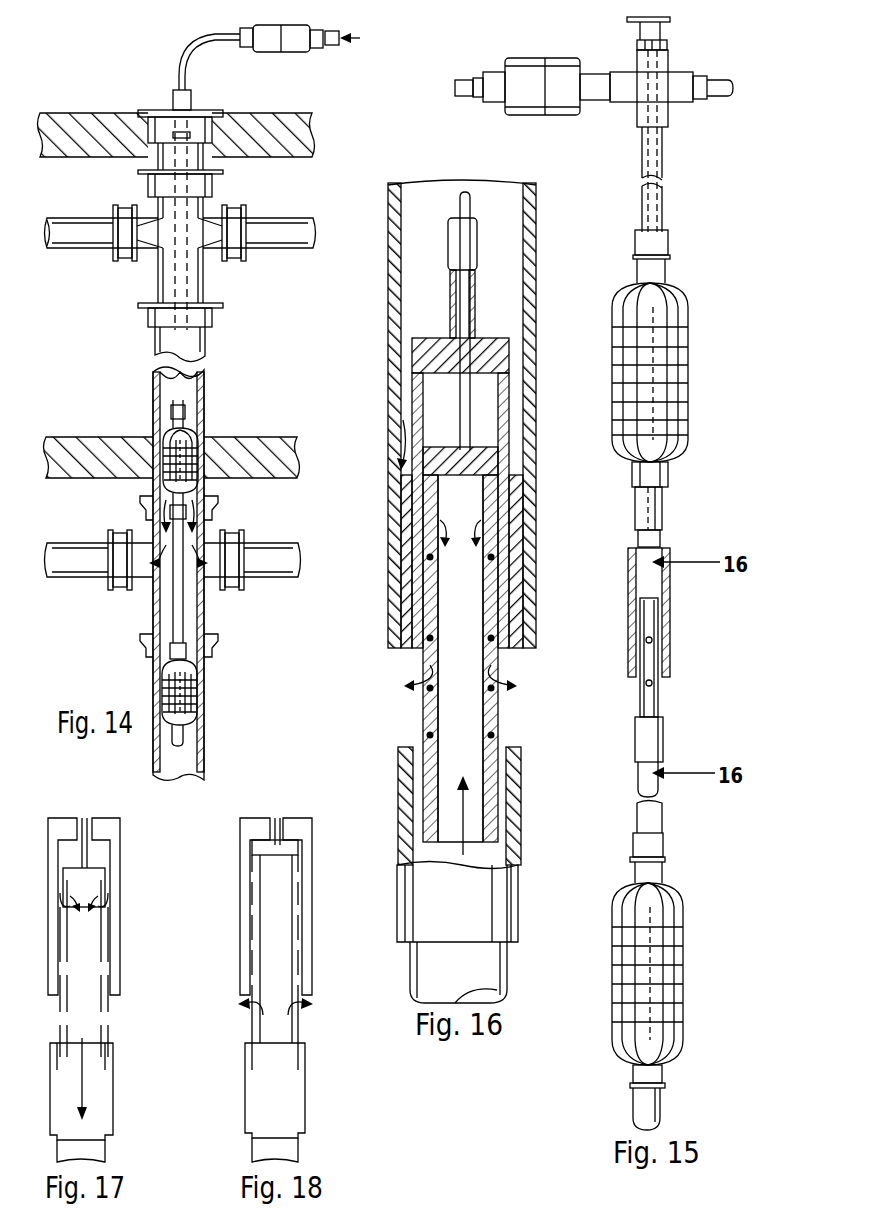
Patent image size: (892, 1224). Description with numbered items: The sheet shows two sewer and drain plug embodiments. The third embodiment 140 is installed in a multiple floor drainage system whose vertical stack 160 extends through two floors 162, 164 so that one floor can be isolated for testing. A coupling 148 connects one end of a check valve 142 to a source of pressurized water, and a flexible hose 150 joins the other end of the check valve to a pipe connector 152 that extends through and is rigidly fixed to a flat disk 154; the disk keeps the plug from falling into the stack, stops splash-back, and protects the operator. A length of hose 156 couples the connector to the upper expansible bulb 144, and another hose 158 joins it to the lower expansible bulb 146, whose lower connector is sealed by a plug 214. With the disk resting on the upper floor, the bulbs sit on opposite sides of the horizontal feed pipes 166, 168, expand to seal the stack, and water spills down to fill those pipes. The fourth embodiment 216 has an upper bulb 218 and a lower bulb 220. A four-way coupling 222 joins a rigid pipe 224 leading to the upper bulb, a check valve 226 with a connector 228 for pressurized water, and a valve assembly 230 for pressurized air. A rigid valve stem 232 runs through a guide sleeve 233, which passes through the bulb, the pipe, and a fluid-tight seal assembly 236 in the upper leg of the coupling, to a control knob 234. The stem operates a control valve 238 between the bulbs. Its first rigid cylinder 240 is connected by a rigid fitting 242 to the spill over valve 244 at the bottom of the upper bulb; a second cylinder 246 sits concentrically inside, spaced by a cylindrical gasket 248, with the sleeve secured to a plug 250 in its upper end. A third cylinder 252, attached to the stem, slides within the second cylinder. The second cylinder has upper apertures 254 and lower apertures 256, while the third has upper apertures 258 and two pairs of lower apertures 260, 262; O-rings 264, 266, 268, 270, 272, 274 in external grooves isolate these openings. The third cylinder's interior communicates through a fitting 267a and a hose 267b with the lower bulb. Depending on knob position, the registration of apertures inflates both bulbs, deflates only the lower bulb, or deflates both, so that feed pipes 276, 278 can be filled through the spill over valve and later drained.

In FIG. 14, the third embodiment 140 is at (188, 428).
In FIG. 14, the check valve 142 is at (284, 53).
In FIG. 14, the upper expansible bulb 144 is at (163, 440).
In FIG. 14, the lower expansible bulb 146 is at (184, 694).
In FIG. 14, the coupling 148 is at (352, 45).
In FIG. 14, the flexible hose 150 is at (201, 41).
In FIG. 14, the pipe connector 152 is at (176, 95).
In FIG. 14, the flat disk 154 is at (150, 112).
In FIG. 14, the length of hose 156 is at (175, 277).
In FIG. 14, the length of hose 158 is at (176, 598).
In FIG. 14, the vertical stack 160 is at (205, 352).
In FIG. 14, the floor 162 is at (92, 112).
In FIG. 14, the floor 164 is at (150, 450).
In FIG. 14, the horizontal feed pipe 166 is at (82, 543).
In FIG. 14, the horizontal feed pipe 168 is at (258, 543).
In FIG. 14, the plug 214 is at (197, 745).
In FIG. 15, the plug 214 is at (660, 1118).
In FIG. 15, the fourth embodiment 216 is at (683, 296).
In FIG. 15, the upper bulb 218 is at (675, 378).
In FIG. 15, the lower bulb 220 is at (660, 918).
In FIG. 15, the four-way coupling 222 is at (680, 106).
In FIG. 15, the rigid pipe 224 is at (664, 202).
In FIG. 15, the check valve 226 is at (525, 60).
In FIG. 15, the connector 228 is at (460, 98).
In FIG. 15, the valve assembly 230 is at (701, 78).
In FIG. 16, the valve stem 232 is at (468, 200).
In FIG. 17, the valve stem 232 is at (84, 853).
In FIG. 18, the valve stem 232 is at (283, 822).
In FIG. 15, the guide sleeve 233 is at (645, 178).
In FIG. 16, the guide sleeve 233 is at (460, 225).
In FIG. 15, the control knob 234 is at (664, 32).
In FIG. 15, the fluid-tight seal assembly 236 is at (637, 46).
In FIG. 15, the control valve 238 is at (671, 637).
In FIG. 16, the control valve 238 is at (408, 722).
In FIG. 15, the first rigid cylinder 240 is at (670, 615).
In FIG. 16, the first rigid cylinder 240 is at (530, 267).
In FIG. 17, the first rigid cylinder 240 is at (118, 935).
In FIG. 18, the first rigid cylinder 240 is at (312, 895).
In FIG. 15, the rigid fitting 242 is at (662, 538).
In FIG. 15, the spill over valve 244 is at (665, 505).
In FIG. 15, the second cylinder 246 is at (646, 696).
In FIG. 16, the second cylinder 246 is at (505, 377).
In FIG. 17, the second cylinder 246 is at (109, 1025).
In FIG. 18, the second cylinder 246 is at (300, 1028).
In FIG. 16, the cylindrical gasket 248 is at (514, 576).
In FIG. 16, the plug 250 is at (448, 360).
In FIG. 16, the third cylinder 252 is at (495, 713).
In FIG. 17, the third cylinder 252 is at (108, 954).
In FIG. 18, the third cylinder 252 is at (295, 933).
In FIG. 15, the upper apertures 254 is at (646, 640).
In FIG. 16, the upper apertures 254 is at (505, 480).
In FIG. 17, the upper apertures 254 is at (107, 912).
In FIG. 18, the upper apertures 254 is at (298, 910).
In FIG. 15, the lower apertures 256 is at (652, 684).
In FIG. 16, the lower apertures 256 is at (510, 667).
In FIG. 17, the lower apertures 256 is at (108, 1008).
In FIG. 18, the lower apertures 256 is at (300, 1004).
In FIG. 16, the upper apertures 258 is at (488, 520).
In FIG. 17, the upper apertures 258 is at (63, 908).
In FIG. 18, the upper apertures 258 is at (291, 877).
In FIG. 16, the lower apertures 260 is at (485, 655).
In FIG. 17, the lower apertures 260 is at (65, 975).
In FIG. 18, the lower apertures 260 is at (257, 953).
In FIG. 16, the lower apertures 262 is at (508, 752).
In FIG. 17, the lower apertures 262 is at (65, 1025).
In FIG. 18, the lower apertures 262 is at (255, 1010).
In FIG. 16, the O-ring 264 is at (402, 462).
In FIG. 16, the O-ring 266 is at (420, 560).
In FIG. 15, the fitting 267a is at (663, 742).
In FIG. 16, the fitting 267a is at (508, 887).
In FIG. 17, the fitting 267a is at (113, 1098).
In FIG. 18, the fitting 267a is at (305, 1100).
In FIG. 15, the hose 267b is at (660, 818).
In FIG. 16, the hose 267b is at (487, 973).
In FIG. 17, the hose 267b is at (105, 1152).
In FIG. 18, the hose 267b is at (298, 1152).
In FIG. 16, the O-ring 268 is at (422, 638).
In FIG. 16, the O-ring 270 is at (417, 687).
In FIG. 16, the O-ring 272 is at (423, 740).
In FIG. 16, the O-ring 274 is at (493, 782).
In FIG. 14, the feed pipe 276 is at (85, 218).
In FIG. 14, the feed pipe 278 is at (280, 218).